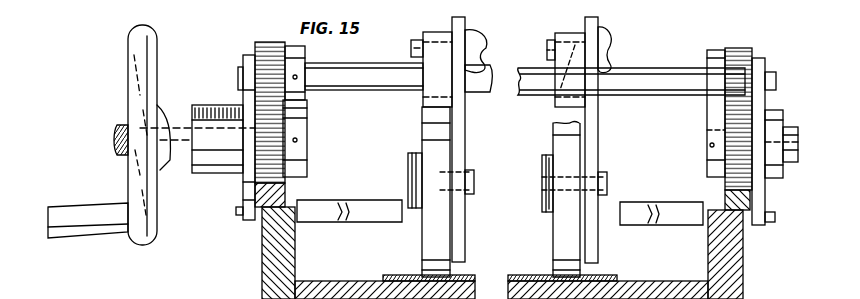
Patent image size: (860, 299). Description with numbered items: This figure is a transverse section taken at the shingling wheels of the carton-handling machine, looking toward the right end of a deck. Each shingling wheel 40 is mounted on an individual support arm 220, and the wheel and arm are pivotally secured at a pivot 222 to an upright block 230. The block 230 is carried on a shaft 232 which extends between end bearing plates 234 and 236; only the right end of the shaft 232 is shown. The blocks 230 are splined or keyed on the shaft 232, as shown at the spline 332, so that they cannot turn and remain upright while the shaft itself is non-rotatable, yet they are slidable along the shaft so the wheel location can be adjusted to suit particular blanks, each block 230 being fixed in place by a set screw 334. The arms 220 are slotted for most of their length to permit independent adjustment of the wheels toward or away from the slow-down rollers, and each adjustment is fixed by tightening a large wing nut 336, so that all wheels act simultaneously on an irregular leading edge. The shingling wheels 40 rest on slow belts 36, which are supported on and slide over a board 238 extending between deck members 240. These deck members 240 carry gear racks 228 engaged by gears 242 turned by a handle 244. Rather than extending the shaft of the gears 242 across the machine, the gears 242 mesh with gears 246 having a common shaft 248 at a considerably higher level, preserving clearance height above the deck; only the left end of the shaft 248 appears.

The slow belts 36 is at (400, 255).
The shingling wheel 40 is at (425, 130).
The support arm 220 is at (458, 135).
The pivot 222 is at (413, 52).
The gear rack 228 is at (280, 195).
The upright block 230 is at (440, 35).
The shaft 232 is at (655, 72).
The end bearing plate 234 is at (248, 55).
The end bearing plate 236 is at (760, 60).
The board 238 is at (322, 284).
The deck members 240 is at (268, 255).
The gears 242 is at (280, 130).
The handle 244 is at (100, 182).
The gears 246 is at (265, 42).
The common shaft 248 is at (350, 50).
The spline 332 is at (688, 80).
The set screw 334 is at (550, 62).
The wing nut 336 is at (490, 38).